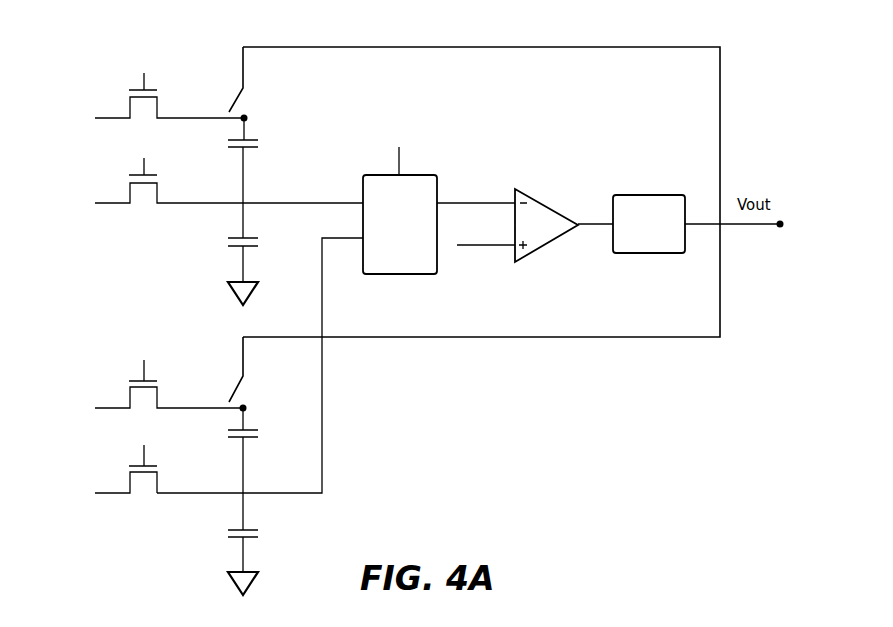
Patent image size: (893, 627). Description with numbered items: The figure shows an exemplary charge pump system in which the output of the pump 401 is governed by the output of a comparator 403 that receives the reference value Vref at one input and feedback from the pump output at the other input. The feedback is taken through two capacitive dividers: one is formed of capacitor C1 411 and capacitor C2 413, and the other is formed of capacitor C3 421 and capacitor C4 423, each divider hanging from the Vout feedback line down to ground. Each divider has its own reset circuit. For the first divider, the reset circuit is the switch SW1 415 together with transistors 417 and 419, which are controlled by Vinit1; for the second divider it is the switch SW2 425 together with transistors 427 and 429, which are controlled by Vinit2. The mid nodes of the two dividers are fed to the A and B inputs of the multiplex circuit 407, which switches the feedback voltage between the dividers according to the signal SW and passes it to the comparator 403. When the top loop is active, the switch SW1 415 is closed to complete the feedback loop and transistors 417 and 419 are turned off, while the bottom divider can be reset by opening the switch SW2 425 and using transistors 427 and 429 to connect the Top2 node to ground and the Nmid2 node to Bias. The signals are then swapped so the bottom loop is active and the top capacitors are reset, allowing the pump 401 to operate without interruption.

The pump 401 is at (636, 195).
The comparator 403 is at (538, 201).
The multiplex circuit 407 is at (440, 188).
The capacitor C1 411 is at (236, 150).
The capacitor C2 413 is at (236, 250).
The switch SW1 415 is at (236, 94).
The transistor 417 is at (128, 109).
The transistor 419 is at (128, 194).
The capacitor C3 421 is at (236, 440).
The capacitor C4 423 is at (236, 540).
The switch SW2 425 is at (236, 384).
The transistor 427 is at (128, 399).
The transistor 429 is at (127, 484).